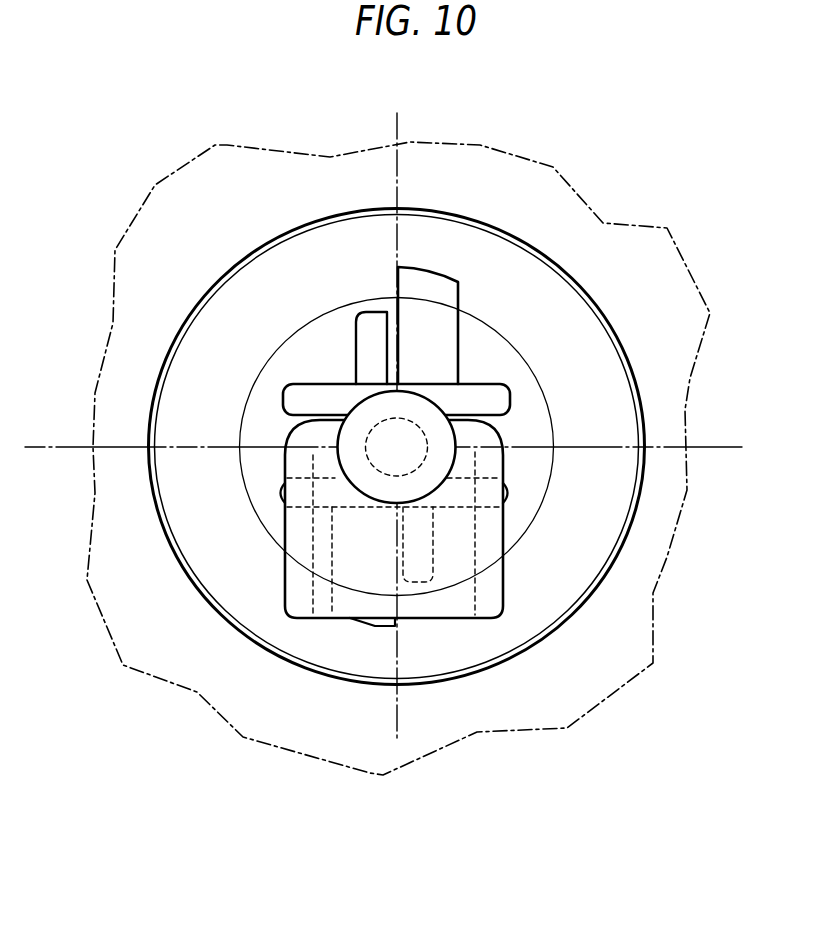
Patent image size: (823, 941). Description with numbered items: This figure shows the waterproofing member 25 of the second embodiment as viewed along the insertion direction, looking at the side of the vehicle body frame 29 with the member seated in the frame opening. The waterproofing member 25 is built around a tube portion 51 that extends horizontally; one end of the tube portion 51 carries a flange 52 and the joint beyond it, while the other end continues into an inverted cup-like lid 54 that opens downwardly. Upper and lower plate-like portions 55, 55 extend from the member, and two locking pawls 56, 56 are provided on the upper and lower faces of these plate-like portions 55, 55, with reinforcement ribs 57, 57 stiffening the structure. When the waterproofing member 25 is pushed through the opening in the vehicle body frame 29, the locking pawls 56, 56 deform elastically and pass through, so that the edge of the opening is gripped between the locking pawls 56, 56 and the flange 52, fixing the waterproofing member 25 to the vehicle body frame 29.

The waterproofing member 25 is at (577, 220).
The vehicle body frame 29 is at (210, 181).
The tube portion 51 is at (357, 416).
The flange 52 is at (558, 310).
The inverted cup-like lid 54 is at (285, 585).
The plate-like portions 55 is at (500, 404).
The locking pawls 56 is at (424, 277).
The reinforcement ribs 57 is at (373, 322).